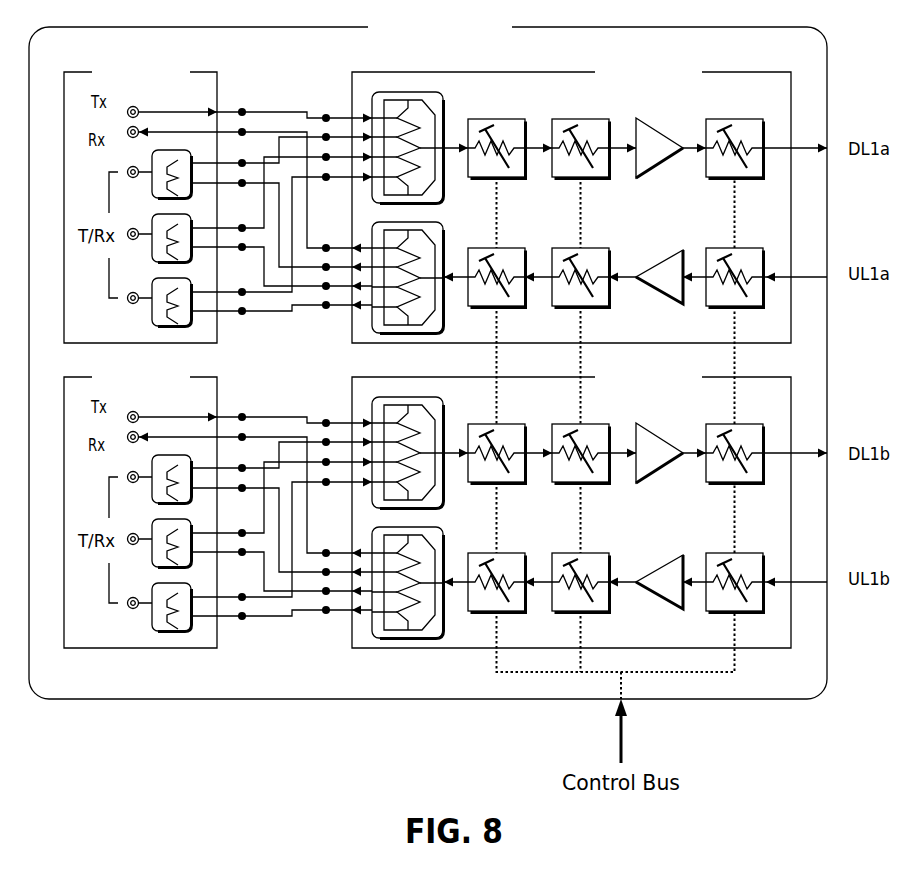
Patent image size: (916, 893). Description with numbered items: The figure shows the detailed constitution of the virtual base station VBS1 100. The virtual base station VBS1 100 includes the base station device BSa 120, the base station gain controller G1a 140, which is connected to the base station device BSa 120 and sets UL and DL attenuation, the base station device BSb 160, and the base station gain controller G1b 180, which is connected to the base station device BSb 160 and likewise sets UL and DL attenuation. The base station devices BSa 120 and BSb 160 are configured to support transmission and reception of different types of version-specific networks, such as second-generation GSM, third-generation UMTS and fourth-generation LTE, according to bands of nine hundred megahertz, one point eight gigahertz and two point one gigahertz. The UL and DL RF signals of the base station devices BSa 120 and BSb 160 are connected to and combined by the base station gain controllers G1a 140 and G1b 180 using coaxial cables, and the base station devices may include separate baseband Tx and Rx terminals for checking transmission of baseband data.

The virtual base station VBS1 100 is at (428, 354).
The base station device BSa 120 is at (140, 198).
The base station gain controller G1a 140 is at (589, 202).
The base station device BSb 160 is at (140, 503).
The base station gain controller G1b 180 is at (589, 507).